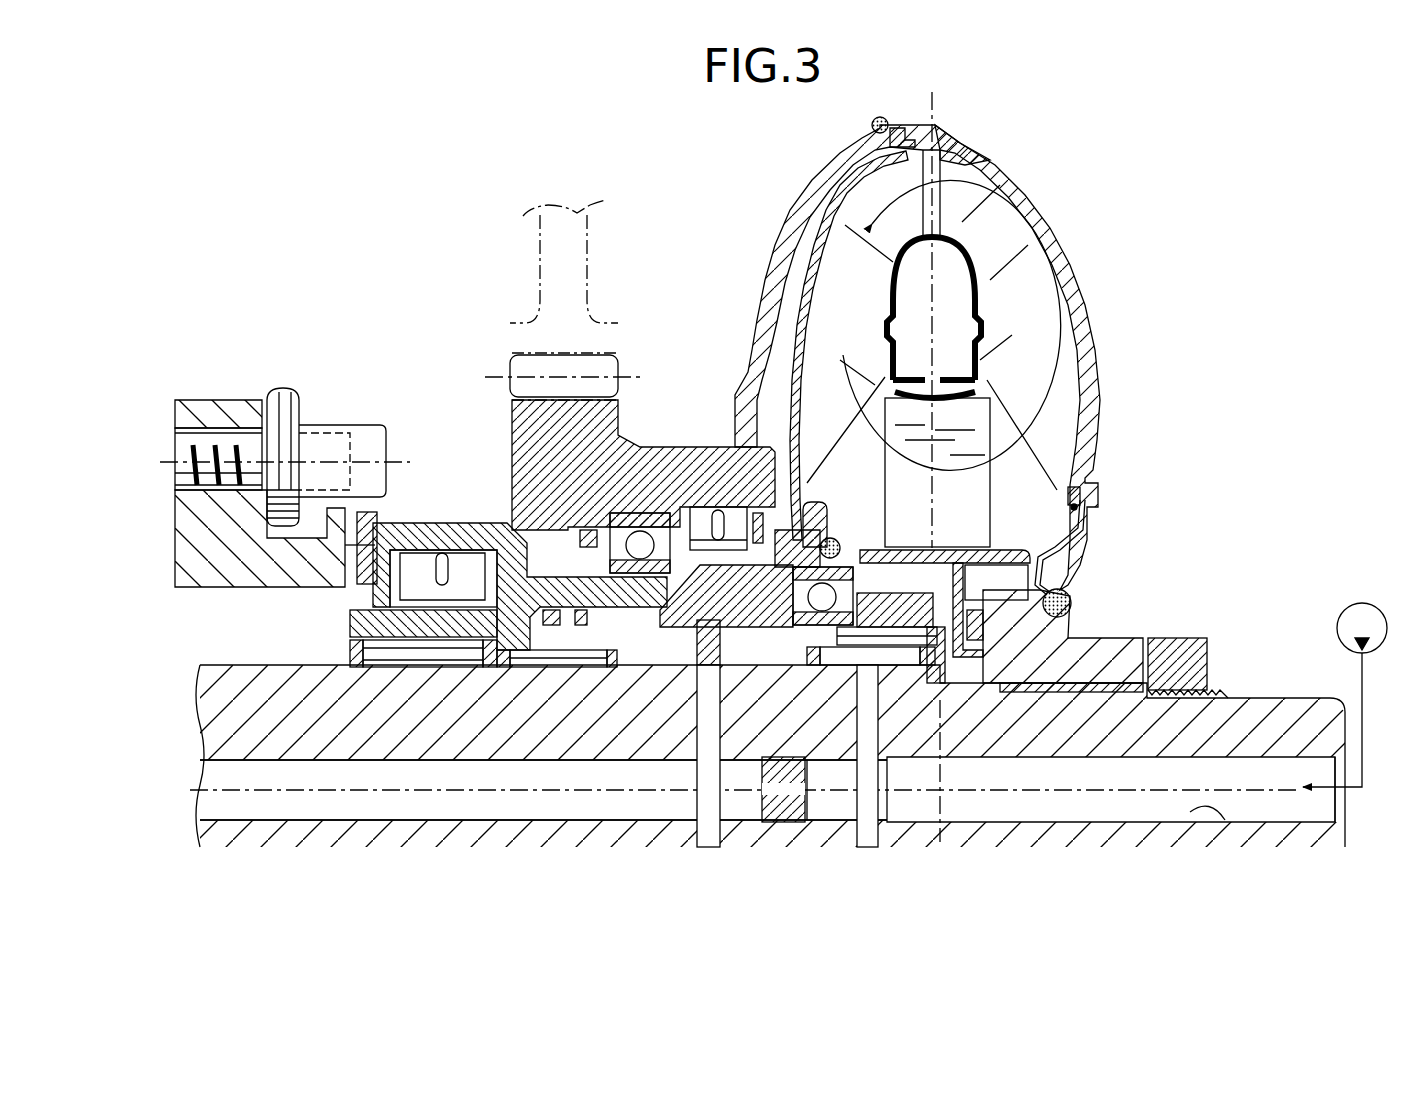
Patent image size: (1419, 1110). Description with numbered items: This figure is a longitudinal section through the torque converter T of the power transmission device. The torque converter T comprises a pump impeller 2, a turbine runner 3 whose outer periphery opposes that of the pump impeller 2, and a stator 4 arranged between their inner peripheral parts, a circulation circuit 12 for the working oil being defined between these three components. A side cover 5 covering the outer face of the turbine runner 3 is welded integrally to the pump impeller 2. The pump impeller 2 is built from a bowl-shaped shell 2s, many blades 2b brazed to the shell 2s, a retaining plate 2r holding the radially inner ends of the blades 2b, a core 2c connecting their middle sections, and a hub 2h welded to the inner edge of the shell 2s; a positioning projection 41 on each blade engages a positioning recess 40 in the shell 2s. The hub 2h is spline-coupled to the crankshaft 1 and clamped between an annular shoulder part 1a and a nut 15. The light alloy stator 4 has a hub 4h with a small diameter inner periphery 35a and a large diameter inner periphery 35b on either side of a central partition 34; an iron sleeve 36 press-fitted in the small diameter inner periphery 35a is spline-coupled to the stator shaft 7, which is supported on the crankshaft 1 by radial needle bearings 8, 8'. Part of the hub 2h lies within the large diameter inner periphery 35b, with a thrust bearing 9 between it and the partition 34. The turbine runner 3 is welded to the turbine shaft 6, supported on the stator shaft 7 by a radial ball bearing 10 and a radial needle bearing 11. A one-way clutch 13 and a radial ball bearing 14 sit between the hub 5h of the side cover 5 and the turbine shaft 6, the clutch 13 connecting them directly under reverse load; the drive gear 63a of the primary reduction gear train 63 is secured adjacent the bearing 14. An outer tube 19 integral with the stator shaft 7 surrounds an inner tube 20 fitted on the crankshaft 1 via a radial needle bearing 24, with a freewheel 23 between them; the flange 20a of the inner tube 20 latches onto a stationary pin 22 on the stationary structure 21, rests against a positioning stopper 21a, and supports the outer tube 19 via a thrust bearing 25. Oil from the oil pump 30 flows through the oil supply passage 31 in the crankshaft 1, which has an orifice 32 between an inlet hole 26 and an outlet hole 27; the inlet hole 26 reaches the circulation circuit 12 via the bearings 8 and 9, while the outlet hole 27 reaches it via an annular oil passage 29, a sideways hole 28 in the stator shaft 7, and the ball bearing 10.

The crankshaft 1 is at (1284, 717).
The annular shoulder part 1a is at (940, 725).
The pump impeller 2 is at (1057, 208).
The blades 2b is at (1075, 385).
The core 2c is at (968, 255).
The hub 2h is at (1112, 650).
The retaining plate 2r is at (1050, 550).
The shell 2s is at (1090, 285).
The turbine runner 3 is at (815, 233).
The stator 4 is at (1010, 435).
The hub 4h is at (923, 435).
The side cover 5 is at (760, 295).
The hub 5h is at (694, 450).
The turbine shaft 6 is at (658, 643).
The stator shaft 7 is at (794, 668).
The radial needle bearing 8 is at (872, 655).
The radial needle bearing 8' is at (527, 710).
The thrust bearing 9 is at (992, 615).
The radial ball bearing 10 is at (805, 592).
The radial needle bearing 11 is at (618, 655).
The circulation circuit 12 is at (1040, 328).
The one-way clutch 13 is at (725, 642).
The radial ball bearing 14 is at (640, 535).
The nut 15 is at (1198, 646).
The outer tube 19 is at (465, 523).
The inner tube 20 is at (418, 645).
The flange 20a is at (300, 510).
The stationary structure 21 is at (230, 408).
The positioning stopper 21a is at (330, 555).
The stationary pin 22 is at (350, 423).
The freewheel 23 is at (415, 586).
The radial needle bearing 24 is at (438, 690).
The thrust bearing 25 is at (360, 553).
The inlet hole 26 is at (860, 733).
The outlet hole 27 is at (697, 785).
The sideways hole 28 is at (720, 550).
The annular oil passage 29 is at (713, 725).
The oil pump 30 is at (1344, 608).
The oil supply passage 31 is at (1223, 820).
The orifice 32 is at (783, 800).
The central partition 34 is at (943, 668).
The small diameter inner periphery 35a is at (880, 590).
The large diameter inner periphery 35b is at (1050, 595).
The iron sleeve 36 is at (990, 535).
The positioning recesses 40 is at (1075, 467).
The positioning projection 41 is at (1085, 505).
The primary reduction gear train 63 is at (578, 208).
The drive gear 63a is at (510, 410).
The torque converter T is at (1140, 230).